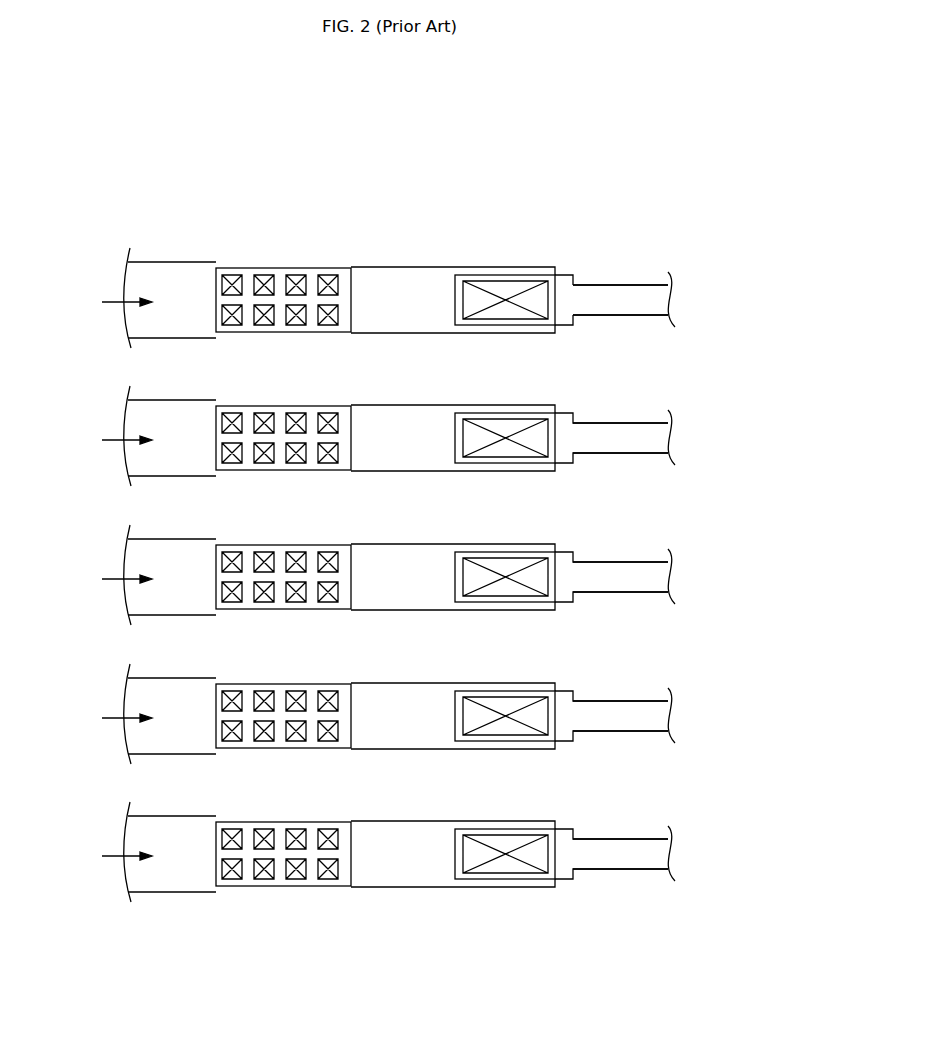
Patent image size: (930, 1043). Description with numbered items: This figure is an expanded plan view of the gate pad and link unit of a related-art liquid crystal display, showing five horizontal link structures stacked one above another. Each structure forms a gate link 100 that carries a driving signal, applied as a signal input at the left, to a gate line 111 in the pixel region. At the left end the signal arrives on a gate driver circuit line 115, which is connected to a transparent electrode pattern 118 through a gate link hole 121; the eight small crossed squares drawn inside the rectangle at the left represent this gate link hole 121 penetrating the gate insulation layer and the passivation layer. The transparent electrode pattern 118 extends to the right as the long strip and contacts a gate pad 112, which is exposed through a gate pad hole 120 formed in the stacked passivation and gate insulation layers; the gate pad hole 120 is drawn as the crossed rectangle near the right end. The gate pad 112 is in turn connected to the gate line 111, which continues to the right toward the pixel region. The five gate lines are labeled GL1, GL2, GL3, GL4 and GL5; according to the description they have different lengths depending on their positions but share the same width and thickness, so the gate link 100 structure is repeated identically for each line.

The gate link 100 is at (389, 183).
The gate line 111 is at (602, 303).
The gate pad 112 is at (565, 282).
The gate driver circuit line 115 is at (190, 277).
The transparent electrode pattern 118 is at (383, 268).
The gate pad hole 120 is at (505, 288).
The gate link hole 121 is at (268, 277).
The gate line GL1 is at (658, 300).
The gate line GL2 is at (658, 438).
The gate line GL3 is at (658, 577).
The gate line GL4 is at (658, 716).
The gate line GL5 is at (658, 854).